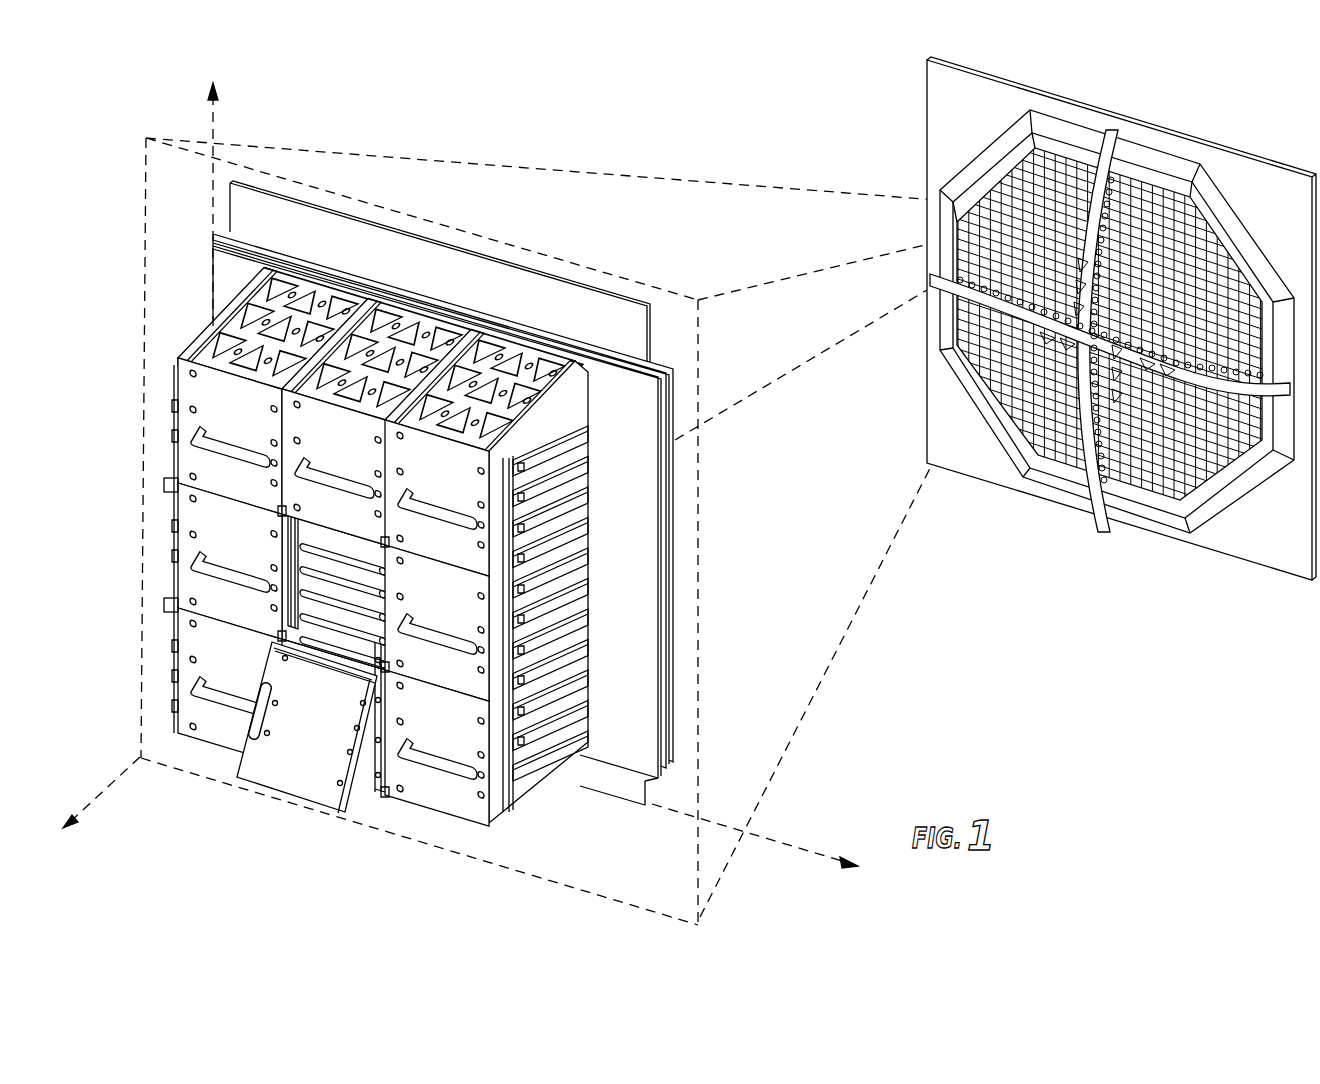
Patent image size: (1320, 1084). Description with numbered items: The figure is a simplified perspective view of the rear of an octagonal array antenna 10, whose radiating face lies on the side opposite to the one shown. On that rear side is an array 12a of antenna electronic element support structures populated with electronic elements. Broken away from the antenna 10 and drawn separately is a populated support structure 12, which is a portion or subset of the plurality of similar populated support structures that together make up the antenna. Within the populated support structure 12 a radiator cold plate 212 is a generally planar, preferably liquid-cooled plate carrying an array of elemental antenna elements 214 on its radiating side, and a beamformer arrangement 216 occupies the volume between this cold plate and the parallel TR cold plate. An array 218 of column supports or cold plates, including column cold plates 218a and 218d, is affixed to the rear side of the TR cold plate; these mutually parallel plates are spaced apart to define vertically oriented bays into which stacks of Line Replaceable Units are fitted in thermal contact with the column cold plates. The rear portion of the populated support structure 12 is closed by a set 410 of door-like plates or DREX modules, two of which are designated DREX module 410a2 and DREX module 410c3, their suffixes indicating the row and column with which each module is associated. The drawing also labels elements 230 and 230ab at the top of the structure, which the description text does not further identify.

The octagonal array antenna 10 is at (1060, 321).
The populated support structure 12 is at (350, 897).
The array of antenna electronic element support structures 12a is at (913, 174).
The radiator cold plate 212 is at (672, 490).
The array of elemental antenna elements 214 is at (660, 519).
The beamformer arrangement 216 is at (650, 330).
The array of column supports 218 is at (339, 571).
The column cold plate 218a is at (180, 533).
The column cold plate 218d is at (553, 770).
The top cover plate 230 is at (321, 330).
The cover rail 230ab is at (235, 328).
The set of door-like plates 410 is at (359, 651).
The DREX module 410a2 is at (290, 768).
The DREX module 410c3 is at (463, 800).